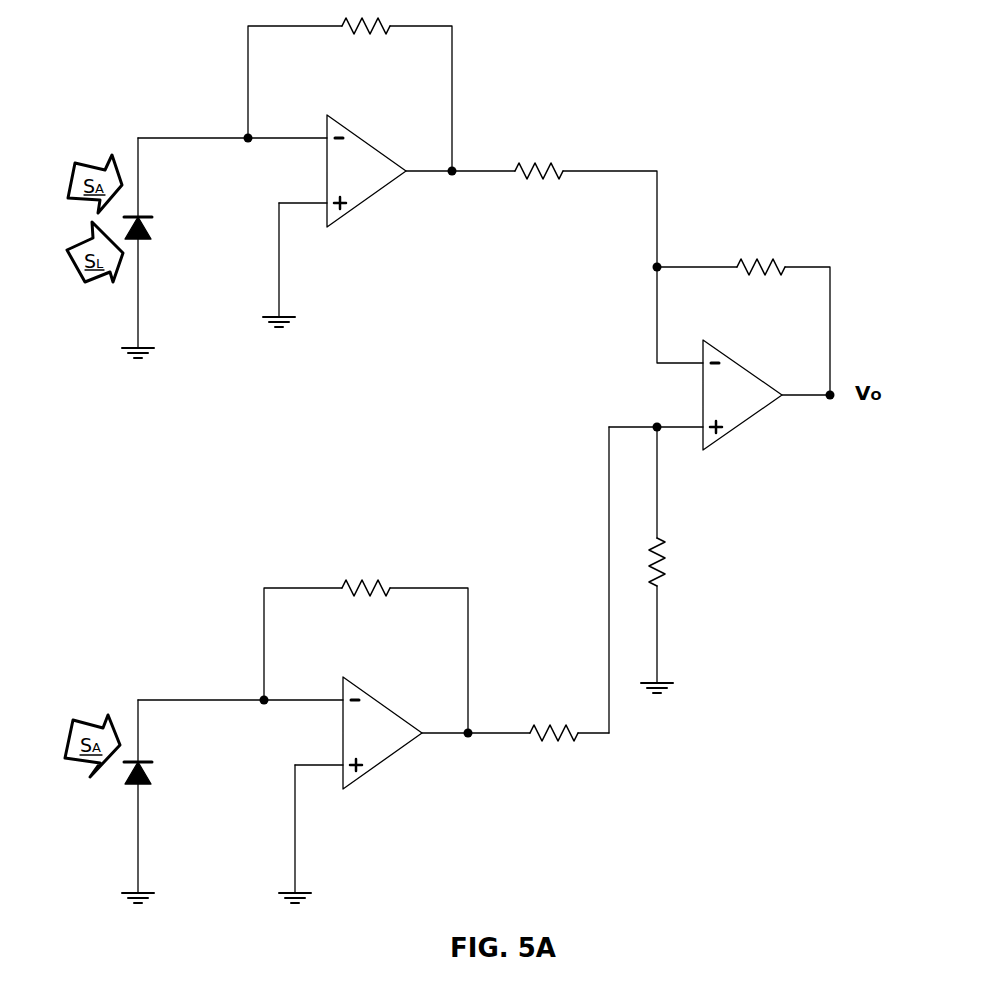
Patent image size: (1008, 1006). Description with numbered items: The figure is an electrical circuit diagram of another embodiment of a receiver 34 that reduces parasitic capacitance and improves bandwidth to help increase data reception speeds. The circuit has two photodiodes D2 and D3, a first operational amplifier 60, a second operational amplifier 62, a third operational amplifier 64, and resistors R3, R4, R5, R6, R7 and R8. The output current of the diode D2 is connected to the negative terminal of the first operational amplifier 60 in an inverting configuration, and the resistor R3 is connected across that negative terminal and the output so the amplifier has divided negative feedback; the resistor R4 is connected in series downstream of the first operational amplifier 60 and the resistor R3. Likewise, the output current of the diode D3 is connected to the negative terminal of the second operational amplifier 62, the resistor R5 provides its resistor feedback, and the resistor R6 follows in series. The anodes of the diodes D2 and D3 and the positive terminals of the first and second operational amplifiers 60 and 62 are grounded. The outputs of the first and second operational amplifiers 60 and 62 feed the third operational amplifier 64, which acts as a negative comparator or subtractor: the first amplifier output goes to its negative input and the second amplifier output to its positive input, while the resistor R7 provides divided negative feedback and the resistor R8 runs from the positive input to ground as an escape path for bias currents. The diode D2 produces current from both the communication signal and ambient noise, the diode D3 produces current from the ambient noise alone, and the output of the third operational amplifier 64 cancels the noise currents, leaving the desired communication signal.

The first operational amplifier 60 is at (363, 199).
The second operational amplifier 62 is at (355, 778).
The third operational amplifier 64 is at (735, 430).
The receiver 34 is at (697, 796).
The diode D2 is at (165, 248).
The diode D3 is at (162, 801).
The resistor R3 is at (350, 94).
The resistor R4 is at (531, 183).
The resistor R5 is at (366, 656).
The resistor R6 is at (515, 766).
The resistor R7 is at (743, 303).
The resistor R8 is at (681, 560).